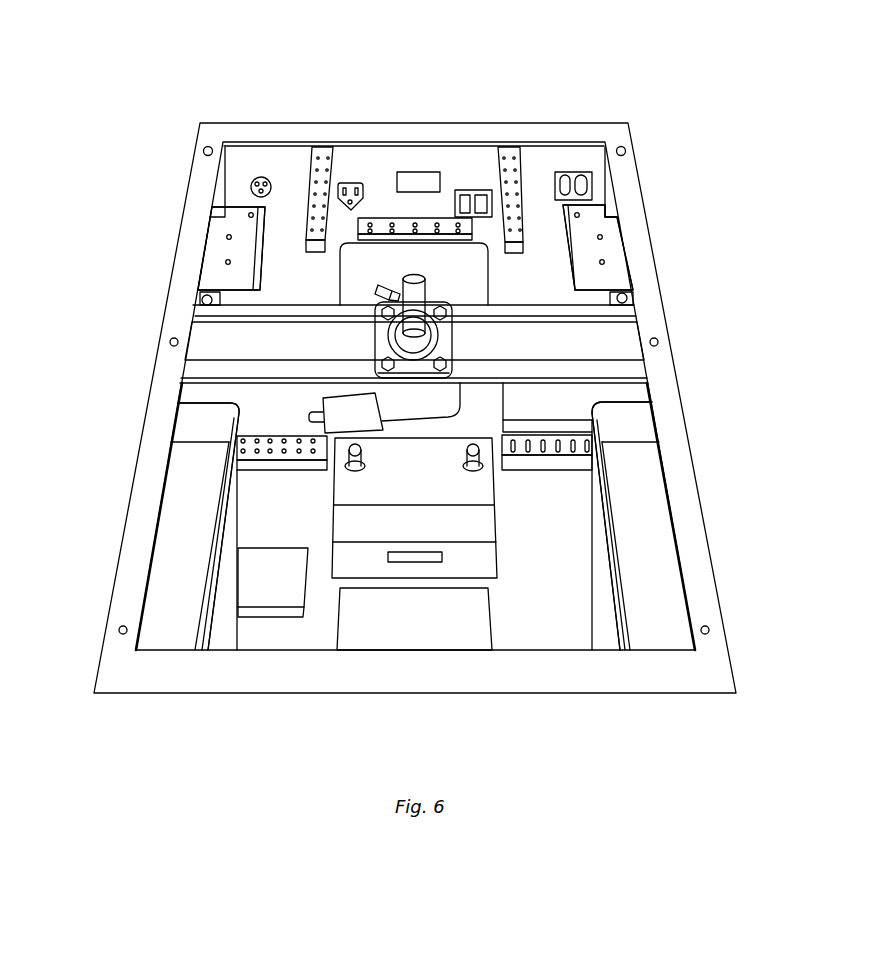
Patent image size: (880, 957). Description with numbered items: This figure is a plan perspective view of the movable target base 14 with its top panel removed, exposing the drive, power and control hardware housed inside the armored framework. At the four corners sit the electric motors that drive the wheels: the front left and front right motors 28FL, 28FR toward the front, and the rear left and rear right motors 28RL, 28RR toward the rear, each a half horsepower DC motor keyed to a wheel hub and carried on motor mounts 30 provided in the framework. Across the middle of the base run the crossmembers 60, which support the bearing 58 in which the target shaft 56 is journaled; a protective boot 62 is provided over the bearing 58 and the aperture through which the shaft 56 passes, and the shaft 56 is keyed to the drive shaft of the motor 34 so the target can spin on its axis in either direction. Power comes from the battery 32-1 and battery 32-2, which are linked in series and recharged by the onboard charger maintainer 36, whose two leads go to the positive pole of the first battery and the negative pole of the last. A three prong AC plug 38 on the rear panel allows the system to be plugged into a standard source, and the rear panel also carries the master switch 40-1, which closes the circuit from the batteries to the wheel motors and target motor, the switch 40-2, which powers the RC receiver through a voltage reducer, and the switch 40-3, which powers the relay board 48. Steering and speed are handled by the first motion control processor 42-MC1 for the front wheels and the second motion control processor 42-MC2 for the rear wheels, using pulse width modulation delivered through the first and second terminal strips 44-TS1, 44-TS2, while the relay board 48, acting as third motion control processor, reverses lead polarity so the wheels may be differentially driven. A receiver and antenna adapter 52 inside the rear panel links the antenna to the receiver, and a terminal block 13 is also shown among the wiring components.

The terminal block 13 is at (430, 218).
The movable target base 14 is at (643, 200).
The motor mount 30 is at (222, 243).
The rear right electric motor 28RR is at (200, 295).
The rear left electric motor 28RL is at (633, 295).
The front right electric motor 28FR is at (203, 417).
The front left electric motor 28FL is at (633, 423).
The battery 32-1 is at (395, 483).
The battery 32-2 is at (360, 272).
The motor 34 is at (318, 430).
The onboard charger maintainer 36 is at (265, 598).
The plug 38 is at (355, 182).
The switch 40-1 is at (258, 177).
The switch 40-2 is at (587, 173).
The switch 40-3 is at (567, 173).
The first motion control processor 42-MC1 is at (322, 157).
The second motion control processor 42-MC2 is at (510, 163).
The first terminal strip 44-TS1 is at (550, 438).
The second terminal strip 44-TS2 is at (282, 435).
The relay board 48 is at (475, 190).
The receiver and antenna adapter 52 is at (417, 172).
The shaft 56 is at (418, 278).
The bearing 58 is at (432, 330).
The crossmembers 60 is at (623, 360).
The protective boot 62 is at (407, 333).